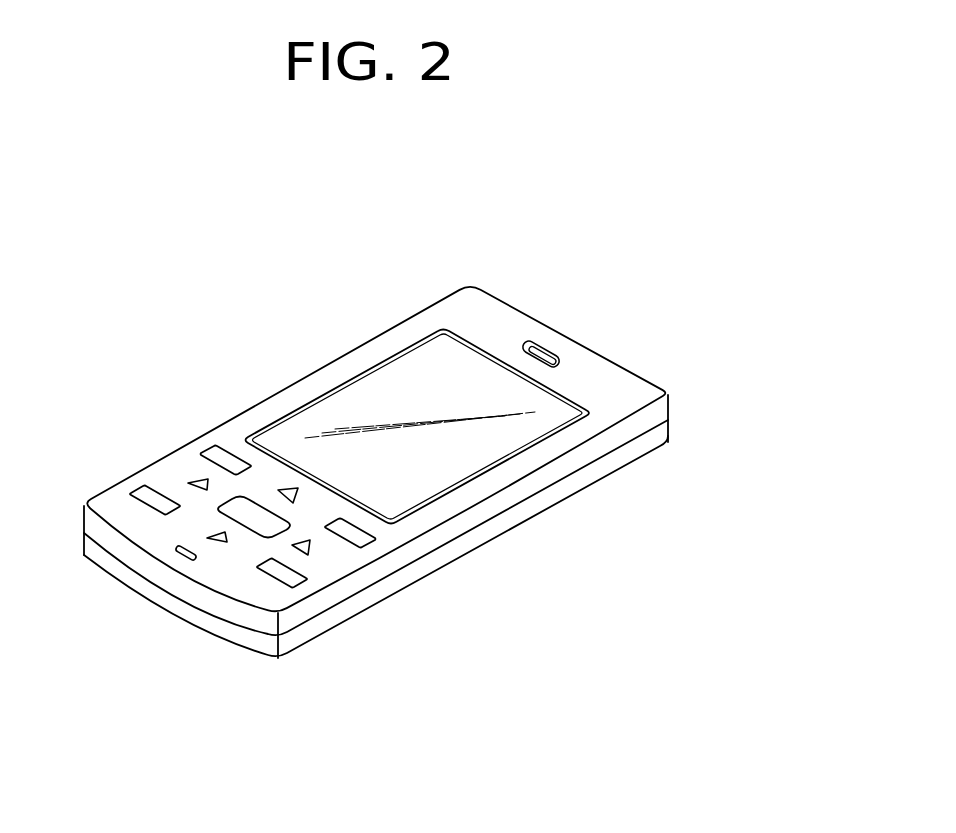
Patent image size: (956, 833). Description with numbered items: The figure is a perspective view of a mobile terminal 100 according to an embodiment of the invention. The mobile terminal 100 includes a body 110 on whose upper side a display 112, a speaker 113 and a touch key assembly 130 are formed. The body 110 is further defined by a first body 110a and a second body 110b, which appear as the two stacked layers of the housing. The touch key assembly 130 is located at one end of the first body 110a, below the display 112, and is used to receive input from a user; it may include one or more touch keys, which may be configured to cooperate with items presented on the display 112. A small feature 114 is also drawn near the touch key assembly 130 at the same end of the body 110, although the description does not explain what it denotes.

The mobile terminal 100 is at (265, 318).
The body 110 is at (470, 516).
The first body 110a is at (662, 412).
The second body 110b is at (434, 546).
The display 112 is at (358, 408).
The speaker 113 is at (548, 352).
The microphone 114 is at (178, 548).
The touch key assembly 130 is at (175, 480).